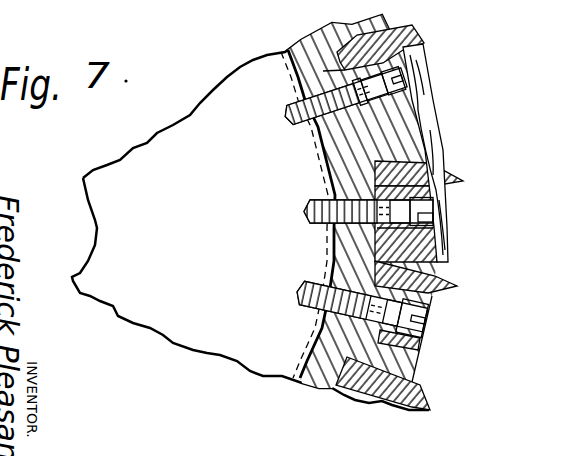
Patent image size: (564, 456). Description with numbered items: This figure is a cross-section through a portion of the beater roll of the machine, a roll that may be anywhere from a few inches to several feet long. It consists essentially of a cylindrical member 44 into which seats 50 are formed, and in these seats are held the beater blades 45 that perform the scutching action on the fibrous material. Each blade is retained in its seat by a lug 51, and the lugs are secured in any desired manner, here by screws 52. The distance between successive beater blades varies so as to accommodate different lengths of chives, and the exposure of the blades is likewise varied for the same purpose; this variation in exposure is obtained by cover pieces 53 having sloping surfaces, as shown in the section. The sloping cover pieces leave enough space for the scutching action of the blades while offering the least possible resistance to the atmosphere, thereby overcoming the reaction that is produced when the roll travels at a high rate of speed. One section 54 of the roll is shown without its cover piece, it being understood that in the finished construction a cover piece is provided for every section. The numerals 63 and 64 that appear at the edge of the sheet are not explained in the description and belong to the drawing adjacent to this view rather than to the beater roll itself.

The cylindrical member 44 is at (266, 197).
The beater blades 45 is at (424, 43).
The seats 50 is at (340, 72).
The lugs 51 is at (316, 136).
The screws 52 is at (284, 122).
The cover pieces 53 is at (428, 73).
The section 54 is at (440, 297).
The element of adjacent figure 63 is at (474, 9).
The element of adjacent figure 64 is at (537, 7).